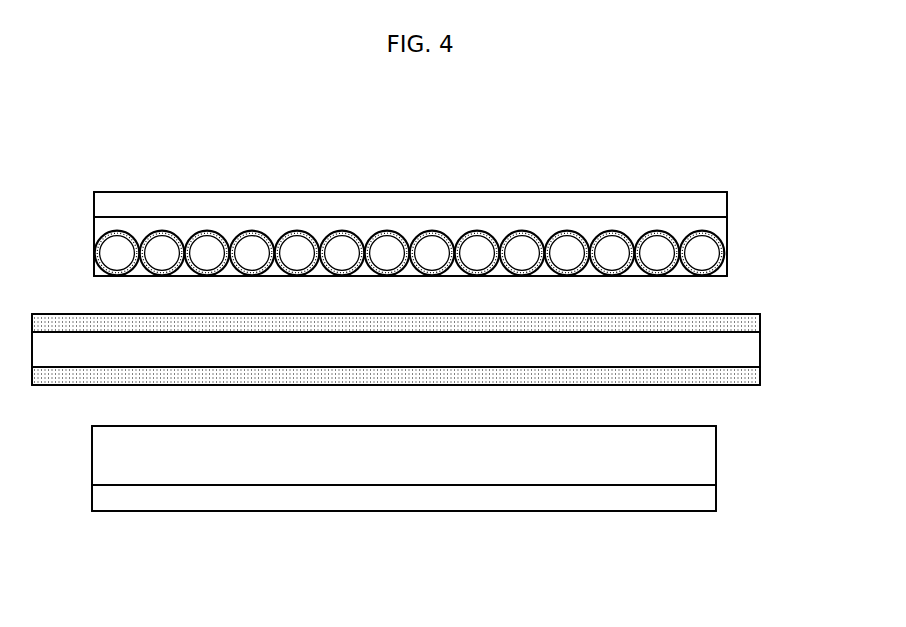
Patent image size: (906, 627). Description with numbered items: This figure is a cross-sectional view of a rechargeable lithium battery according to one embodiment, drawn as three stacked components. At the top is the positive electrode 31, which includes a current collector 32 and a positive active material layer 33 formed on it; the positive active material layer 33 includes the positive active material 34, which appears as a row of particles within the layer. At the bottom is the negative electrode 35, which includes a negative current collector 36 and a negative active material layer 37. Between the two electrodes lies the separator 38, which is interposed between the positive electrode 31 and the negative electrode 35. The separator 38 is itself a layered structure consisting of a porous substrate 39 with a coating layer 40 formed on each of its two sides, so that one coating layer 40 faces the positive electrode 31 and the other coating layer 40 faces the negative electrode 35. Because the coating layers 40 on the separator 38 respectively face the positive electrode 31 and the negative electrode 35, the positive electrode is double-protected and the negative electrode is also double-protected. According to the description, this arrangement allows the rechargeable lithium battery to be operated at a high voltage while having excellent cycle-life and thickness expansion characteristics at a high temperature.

The positive electrode 31 is at (136, 173).
The current collector 32 is at (727, 204).
The positive active material layer 33 is at (724, 258).
The positive active material 34 is at (710, 248).
The negative electrode 35 is at (110, 528).
The negative current collector 36 is at (716, 500).
The negative active material layer 37 is at (716, 453).
The separator 38 is at (86, 302).
The porous substrate 39 is at (760, 350).
The coating layer 40 is at (760, 322).